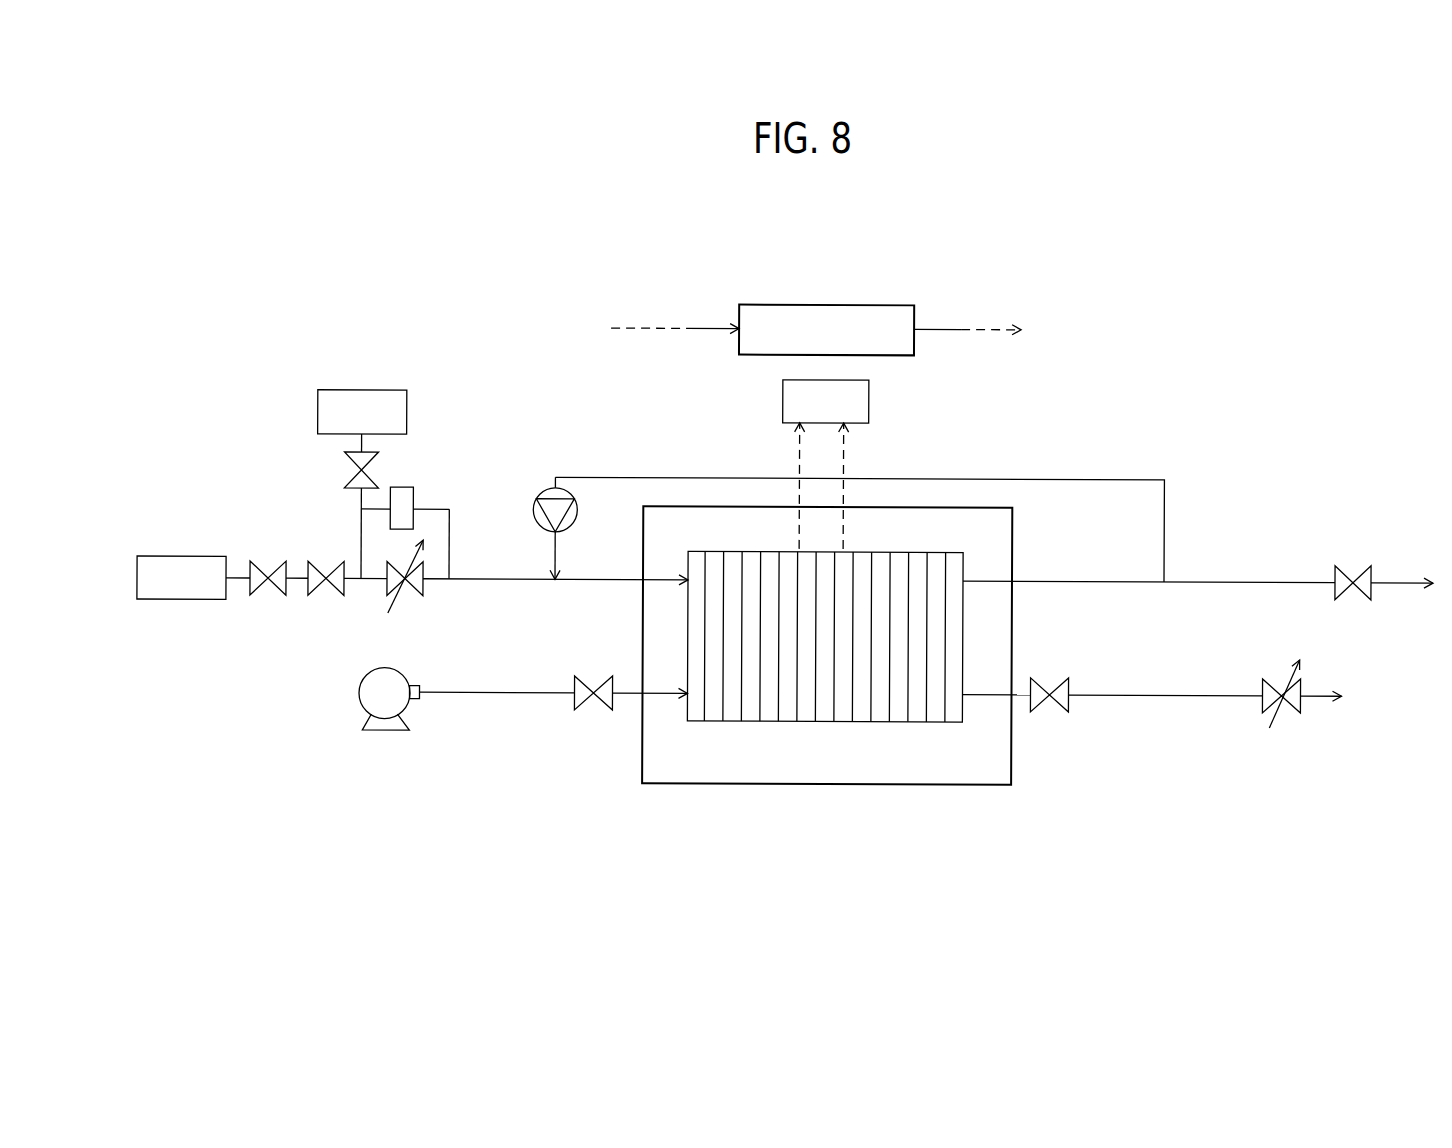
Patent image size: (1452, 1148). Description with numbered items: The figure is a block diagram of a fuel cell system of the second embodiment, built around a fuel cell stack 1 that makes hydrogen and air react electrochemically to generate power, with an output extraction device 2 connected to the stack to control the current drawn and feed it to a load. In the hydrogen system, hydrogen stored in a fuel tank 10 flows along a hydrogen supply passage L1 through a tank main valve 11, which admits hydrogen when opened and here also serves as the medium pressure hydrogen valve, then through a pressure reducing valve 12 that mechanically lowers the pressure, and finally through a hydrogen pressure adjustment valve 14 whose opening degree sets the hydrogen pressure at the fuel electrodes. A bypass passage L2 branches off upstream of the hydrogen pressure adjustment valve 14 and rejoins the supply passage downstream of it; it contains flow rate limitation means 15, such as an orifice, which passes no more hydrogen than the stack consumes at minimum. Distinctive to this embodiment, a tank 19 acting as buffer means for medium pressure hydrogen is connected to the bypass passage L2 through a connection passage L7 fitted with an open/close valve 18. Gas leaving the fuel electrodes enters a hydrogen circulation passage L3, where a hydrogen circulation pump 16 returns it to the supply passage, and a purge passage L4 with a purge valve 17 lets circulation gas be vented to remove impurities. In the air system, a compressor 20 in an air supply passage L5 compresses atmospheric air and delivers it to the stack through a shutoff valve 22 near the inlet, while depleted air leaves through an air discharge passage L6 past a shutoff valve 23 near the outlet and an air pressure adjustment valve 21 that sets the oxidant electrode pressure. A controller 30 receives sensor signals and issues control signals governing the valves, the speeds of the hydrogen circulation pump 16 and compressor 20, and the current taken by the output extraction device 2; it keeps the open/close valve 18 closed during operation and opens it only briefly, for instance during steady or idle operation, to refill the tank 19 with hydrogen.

The fuel cell stack 1 is at (835, 781).
The output extraction device 2 is at (868, 397).
The fuel tank 10 is at (186, 555).
The tank main valve 11 is at (265, 560).
The pressure reducing valve 12 is at (320, 560).
The hydrogen pressure adjustment valve 14 is at (425, 582).
The flow rate limitation means 15 is at (414, 494).
The hydrogen circulation pump 16 is at (575, 522).
The purge valve 17 is at (1357, 596).
The open/close valve 18 is at (344, 469).
The tank 19 is at (368, 388).
The compressor 20 is at (358, 693).
The air pressure adjustment valve 21 is at (1287, 709).
The shutoff valve 22 is at (598, 710).
The shutoff valve 23 is at (1055, 709).
The controller 30 is at (826, 302).
The hydrogen supply passage L1 is at (371, 580).
The bypass passage L2 is at (450, 540).
The hydrogen circulation passage L3 is at (1087, 471).
The purge passage L4 is at (1236, 573).
The air supply passage L5 is at (488, 692).
The air discharge passage L6 is at (1153, 687).
The connection passage L7 is at (364, 441).